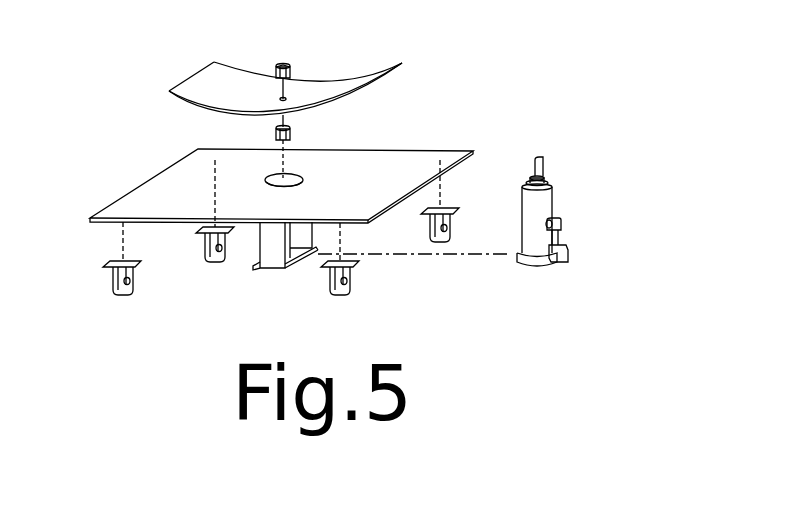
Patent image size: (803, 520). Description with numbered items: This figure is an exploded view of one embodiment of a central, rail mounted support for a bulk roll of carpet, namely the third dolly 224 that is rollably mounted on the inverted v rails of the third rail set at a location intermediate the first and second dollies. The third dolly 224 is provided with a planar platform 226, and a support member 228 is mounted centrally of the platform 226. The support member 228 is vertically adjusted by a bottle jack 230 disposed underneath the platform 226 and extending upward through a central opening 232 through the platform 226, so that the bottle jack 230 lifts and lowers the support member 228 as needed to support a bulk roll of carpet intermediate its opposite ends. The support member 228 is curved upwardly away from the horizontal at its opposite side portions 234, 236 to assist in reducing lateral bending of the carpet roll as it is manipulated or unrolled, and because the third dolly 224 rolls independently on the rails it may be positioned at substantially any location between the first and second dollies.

The third dolly 224 is at (397, 128).
The planar platform 226 is at (140, 200).
The support member 228 is at (225, 82).
The bottle jack 230 is at (545, 212).
The central opening 232 is at (296, 176).
The side portion 234 is at (360, 82).
The side portion 236 is at (195, 83).